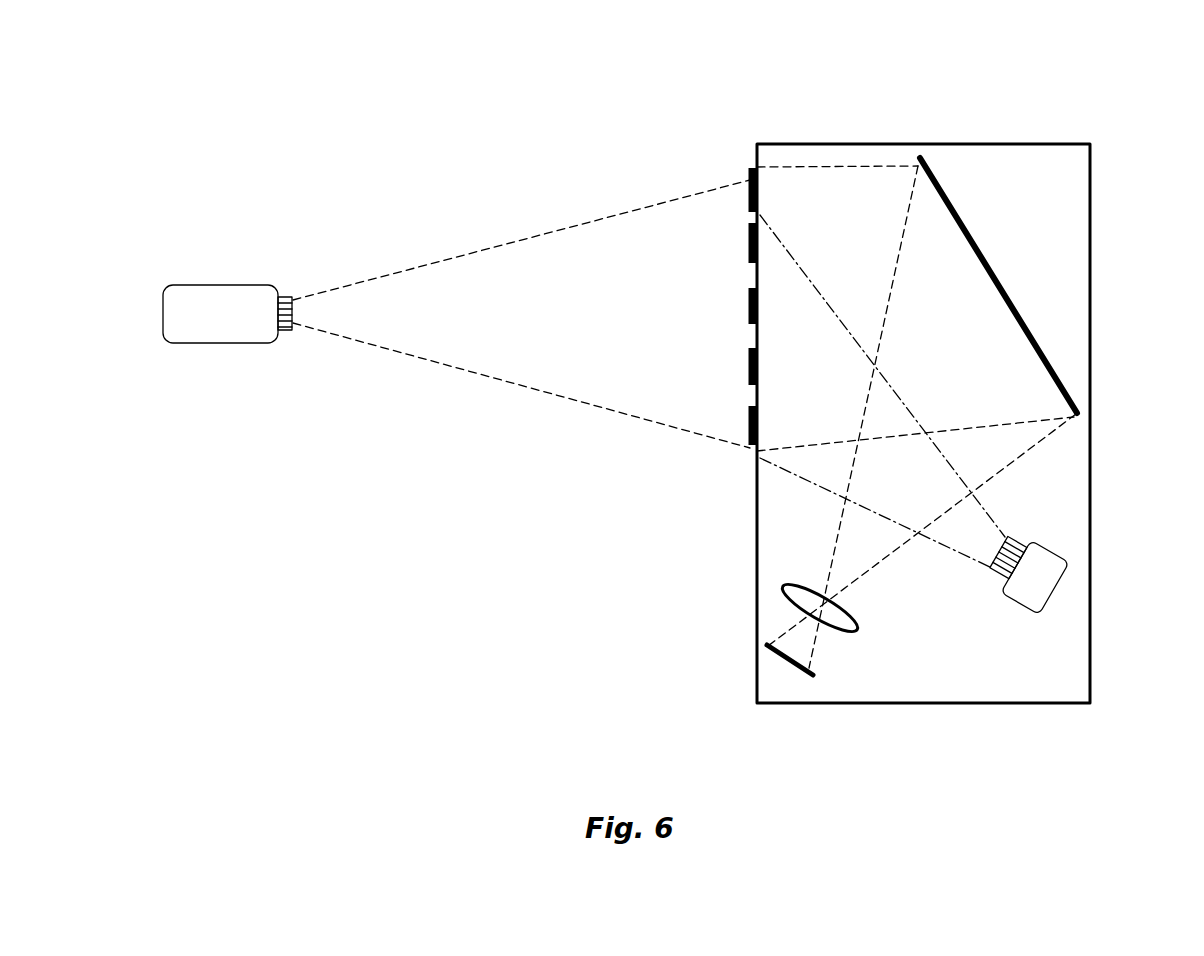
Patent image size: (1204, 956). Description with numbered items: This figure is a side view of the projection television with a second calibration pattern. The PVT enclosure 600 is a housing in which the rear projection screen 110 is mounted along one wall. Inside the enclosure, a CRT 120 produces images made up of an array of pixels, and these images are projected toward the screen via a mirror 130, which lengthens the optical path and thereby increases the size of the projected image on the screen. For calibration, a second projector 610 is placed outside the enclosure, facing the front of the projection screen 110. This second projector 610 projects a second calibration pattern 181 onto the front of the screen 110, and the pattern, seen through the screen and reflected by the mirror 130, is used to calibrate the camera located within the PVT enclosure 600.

The PVT enclosure 600 is at (927, 144).
The second projector 610 is at (197, 345).
The second calibration pattern 181 is at (752, 366).
The rear projection screen 110 is at (760, 211).
The mirror 130 is at (1012, 303).
The CRT 120 is at (856, 622).